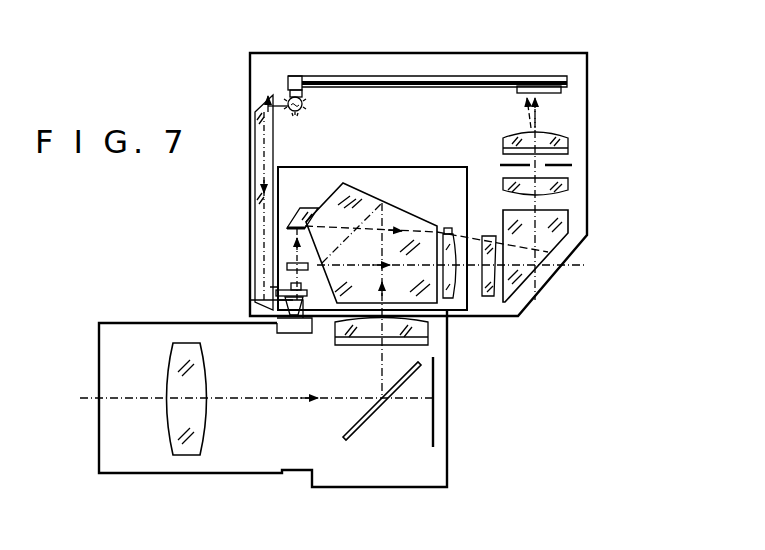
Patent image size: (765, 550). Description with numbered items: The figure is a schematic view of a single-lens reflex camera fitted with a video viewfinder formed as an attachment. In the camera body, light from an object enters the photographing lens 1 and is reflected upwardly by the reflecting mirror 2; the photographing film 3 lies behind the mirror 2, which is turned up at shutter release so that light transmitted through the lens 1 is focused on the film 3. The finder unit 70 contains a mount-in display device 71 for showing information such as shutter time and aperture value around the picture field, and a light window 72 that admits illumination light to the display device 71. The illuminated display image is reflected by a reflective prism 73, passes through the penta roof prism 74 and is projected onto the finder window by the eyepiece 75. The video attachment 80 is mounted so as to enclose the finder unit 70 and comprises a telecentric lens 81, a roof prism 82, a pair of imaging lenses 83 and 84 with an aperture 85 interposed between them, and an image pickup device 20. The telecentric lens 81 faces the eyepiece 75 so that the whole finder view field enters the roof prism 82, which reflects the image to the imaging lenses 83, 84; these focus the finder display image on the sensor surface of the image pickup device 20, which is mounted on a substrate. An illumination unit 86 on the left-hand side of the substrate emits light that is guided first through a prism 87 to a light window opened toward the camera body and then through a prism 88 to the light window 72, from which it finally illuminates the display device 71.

The photographing lens 1 is at (201, 418).
The reflecting mirror 2 is at (365, 428).
The photographing film 3 is at (435, 417).
The image pickup device 20 is at (558, 93).
The finder unit 70 is at (378, 166).
The display device 71 is at (288, 264).
The light window 72 is at (290, 296).
The reflective prism 73 is at (302, 216).
The penta roof prism 74 is at (410, 218).
The eyepiece 75 is at (450, 232).
The video attachment 80 is at (393, 50).
The telecentric lens 81 is at (490, 297).
The roof prism 82 is at (525, 280).
The imaging lens 83 is at (568, 190).
The imaging lens 84 is at (566, 142).
The aperture 85 is at (572, 166).
The illumination unit 86 is at (291, 98).
The prism 87 is at (258, 133).
The prism 88 is at (292, 324).